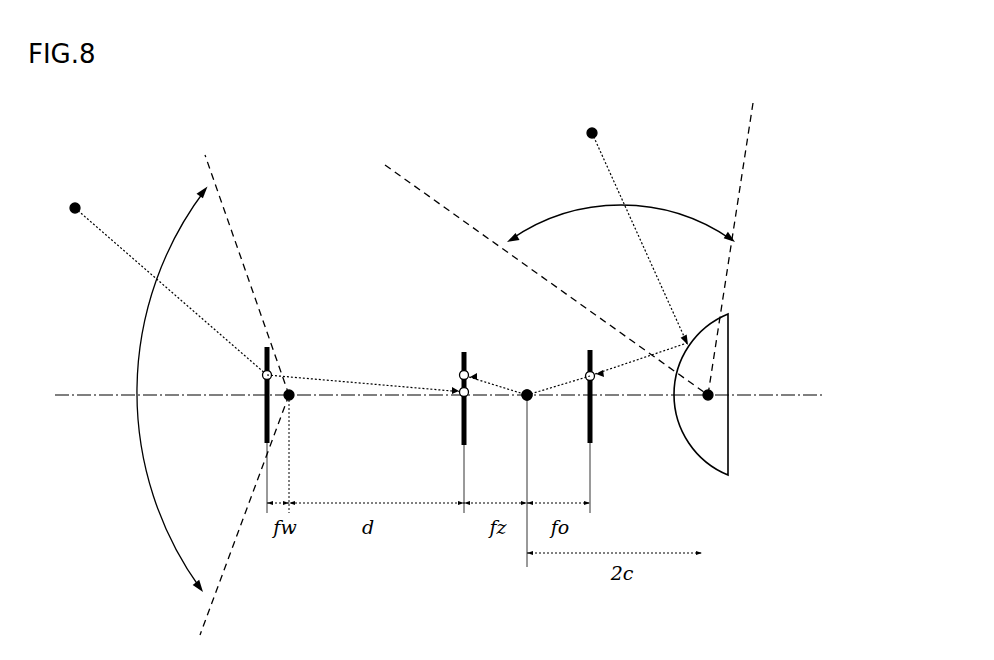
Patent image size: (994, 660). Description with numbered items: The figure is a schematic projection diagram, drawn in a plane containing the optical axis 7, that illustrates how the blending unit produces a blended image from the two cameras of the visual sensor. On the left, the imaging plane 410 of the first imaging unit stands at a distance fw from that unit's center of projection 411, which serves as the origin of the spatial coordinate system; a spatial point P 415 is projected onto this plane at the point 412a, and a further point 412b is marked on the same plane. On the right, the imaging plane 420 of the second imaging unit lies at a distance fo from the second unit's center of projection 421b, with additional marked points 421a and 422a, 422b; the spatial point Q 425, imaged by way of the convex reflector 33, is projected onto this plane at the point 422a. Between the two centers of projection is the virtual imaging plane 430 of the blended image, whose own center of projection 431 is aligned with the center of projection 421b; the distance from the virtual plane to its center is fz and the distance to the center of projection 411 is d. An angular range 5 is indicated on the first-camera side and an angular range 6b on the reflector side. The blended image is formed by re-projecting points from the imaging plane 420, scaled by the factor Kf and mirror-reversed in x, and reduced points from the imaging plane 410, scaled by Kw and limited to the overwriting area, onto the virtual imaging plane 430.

The field angle 5 is at (199, 395).
The angle of illumination 6b is at (569, 249).
The optical axis 7 is at (454, 395).
The convex reflector 33 is at (728, 364).
The imaging plane of the first imaging unit 410 is at (268, 347).
The center of projection of the first imaging unit 411 is at (293, 400).
The point of projection of point P on imaging plane 410 412a is at (262, 375).
The focal point of first lens 412b is at (461, 396).
The point P 415 is at (148, 273).
The imaging plane of the second imaging unit 420 is at (591, 443).
The focal point of third lens 421a is at (712, 400).
The center of projection of the second imaging unit 421b is at (525, 391).
The point of projection of point Q on imaging plane 420 422a is at (588, 372).
The focal point of third lens 422b is at (459, 372).
The point Q 425 is at (618, 219).
The virtual imaging plane of the blended image 430 is at (464, 352).
The center of projection of the blended image 431 is at (524, 401).